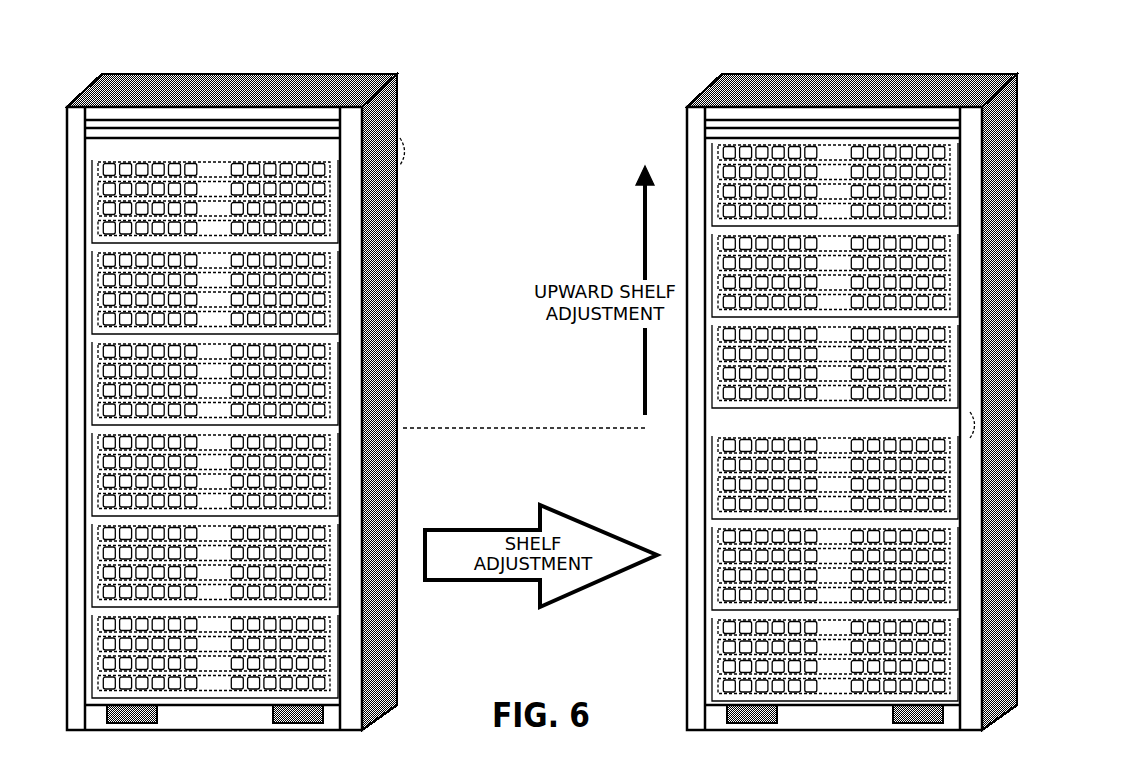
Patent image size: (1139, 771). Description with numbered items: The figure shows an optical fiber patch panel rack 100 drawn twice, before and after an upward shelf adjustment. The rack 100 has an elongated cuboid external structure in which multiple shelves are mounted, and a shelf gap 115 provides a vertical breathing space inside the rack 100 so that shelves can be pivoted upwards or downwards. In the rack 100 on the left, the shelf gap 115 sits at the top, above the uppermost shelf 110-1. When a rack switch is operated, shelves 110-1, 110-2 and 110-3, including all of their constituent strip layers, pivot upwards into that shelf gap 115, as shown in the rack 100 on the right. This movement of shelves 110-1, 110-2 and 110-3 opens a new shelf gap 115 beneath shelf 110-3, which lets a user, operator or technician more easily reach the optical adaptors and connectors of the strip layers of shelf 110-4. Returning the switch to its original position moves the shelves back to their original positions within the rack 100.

The optical fiber patch panel rack 100 is at (231, 66).
The shelf 110-1 is at (972, 180).
The shelf 110-2 is at (972, 276).
The shelf 110-3 is at (972, 372).
The shelf 110-4 is at (694, 477).
The shelf gap 115 is at (427, 152).